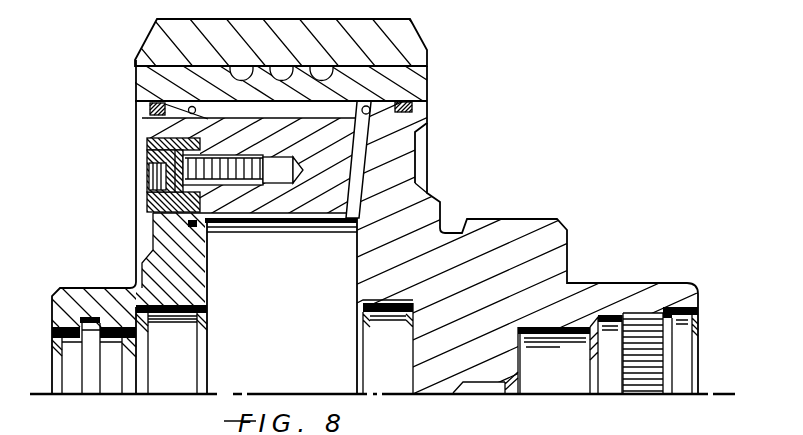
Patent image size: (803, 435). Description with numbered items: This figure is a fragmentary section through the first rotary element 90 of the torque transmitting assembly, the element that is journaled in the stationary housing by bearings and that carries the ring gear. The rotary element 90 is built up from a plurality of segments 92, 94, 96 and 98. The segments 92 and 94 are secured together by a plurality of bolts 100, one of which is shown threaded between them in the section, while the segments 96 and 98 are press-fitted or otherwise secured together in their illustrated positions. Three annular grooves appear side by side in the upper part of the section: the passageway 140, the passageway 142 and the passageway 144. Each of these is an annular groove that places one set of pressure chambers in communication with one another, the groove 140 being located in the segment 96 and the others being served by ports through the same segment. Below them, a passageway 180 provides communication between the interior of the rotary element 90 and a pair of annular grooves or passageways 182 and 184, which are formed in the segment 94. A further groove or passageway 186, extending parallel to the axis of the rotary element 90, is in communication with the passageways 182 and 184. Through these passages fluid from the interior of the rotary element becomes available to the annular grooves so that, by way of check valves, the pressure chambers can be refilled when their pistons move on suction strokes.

The first rotary element 90 is at (503, 187).
The segment 92 is at (207, 296).
The segment 94 is at (430, 119).
The segment 96 is at (428, 82).
The segment 98 is at (428, 45).
The bolts 100 is at (147, 190).
The passageway 140 is at (280, 65).
The passageway 142 is at (240, 64).
The passageway 144 is at (318, 65).
The passageway 180 is at (348, 222).
The annular groove or passageway 182 is at (368, 114).
The annular groove or passageway 184 is at (185, 113).
The groove or passageway 186 is at (248, 118).